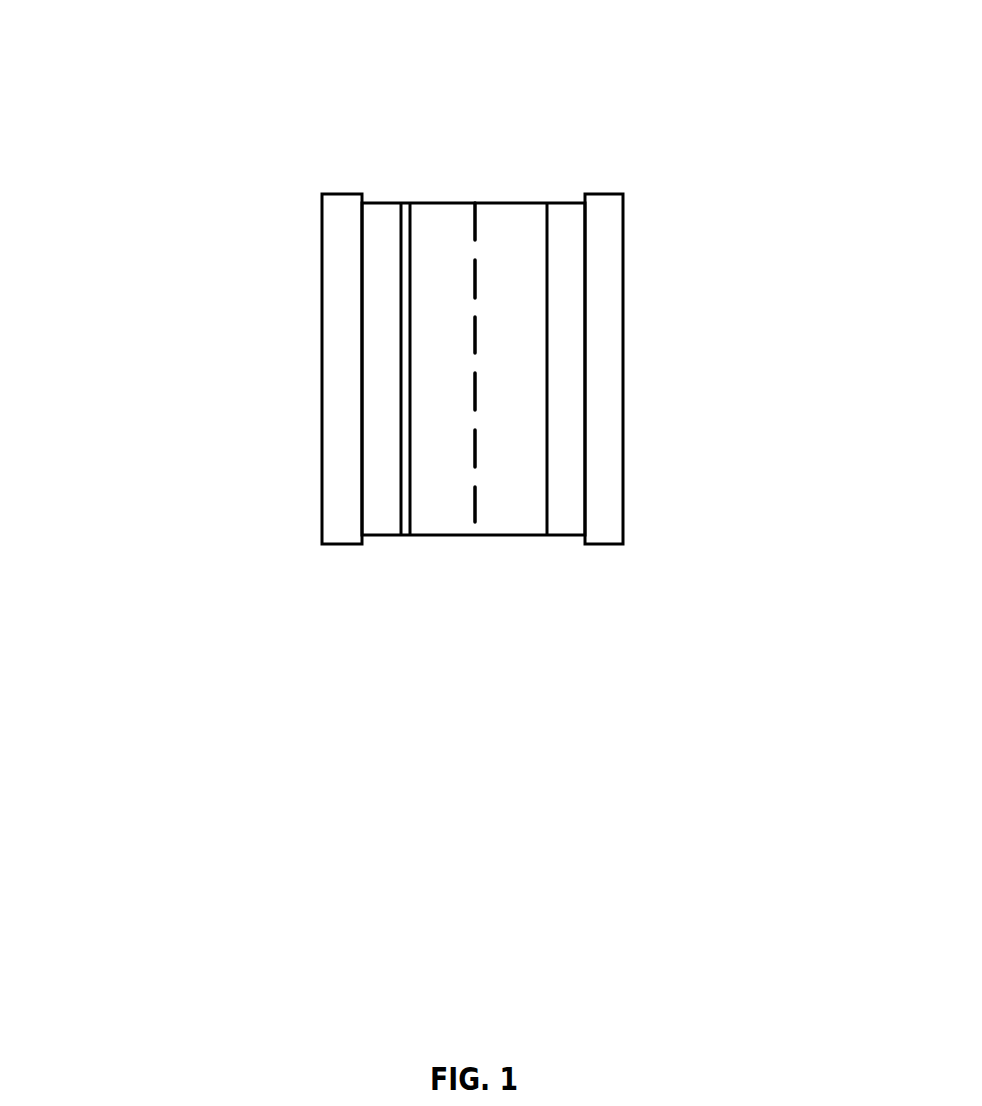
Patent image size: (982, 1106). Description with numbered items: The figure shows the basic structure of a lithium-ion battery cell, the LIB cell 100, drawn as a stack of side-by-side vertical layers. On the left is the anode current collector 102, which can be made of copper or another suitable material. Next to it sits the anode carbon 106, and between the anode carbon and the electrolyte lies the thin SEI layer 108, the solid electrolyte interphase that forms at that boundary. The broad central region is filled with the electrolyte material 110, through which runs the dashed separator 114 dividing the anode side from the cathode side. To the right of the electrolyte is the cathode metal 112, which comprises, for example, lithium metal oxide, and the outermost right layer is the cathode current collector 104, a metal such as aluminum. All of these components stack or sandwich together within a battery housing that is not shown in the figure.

The LIB cell 100 is at (293, 98).
The anode current collector 102 is at (306, 334).
The cathode current collector 104 is at (636, 222).
The anode carbon 106 is at (353, 519).
The SEI layer 108 is at (407, 552).
The electrolyte material 110 is at (448, 186).
The cathode metal 112 is at (596, 397).
The separator 114 is at (490, 535).